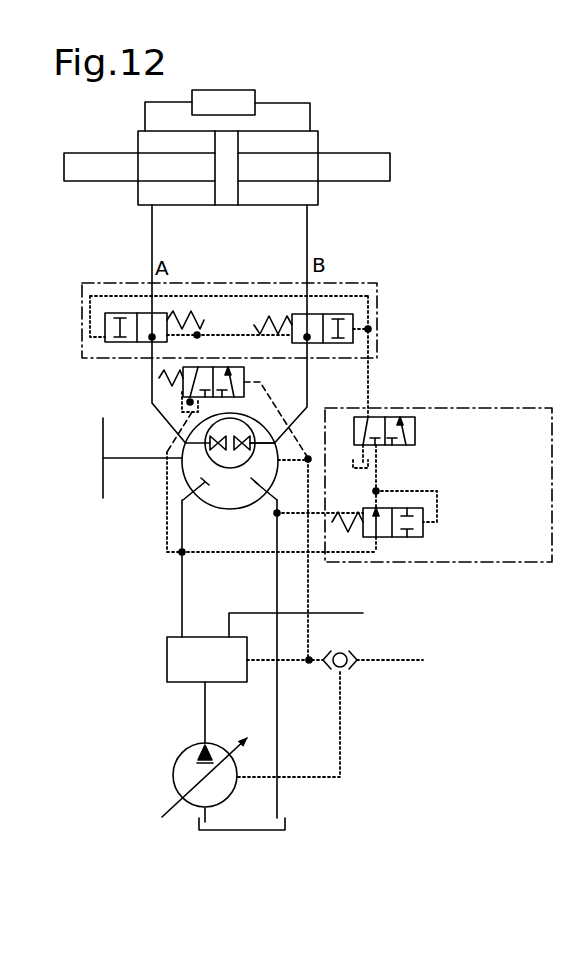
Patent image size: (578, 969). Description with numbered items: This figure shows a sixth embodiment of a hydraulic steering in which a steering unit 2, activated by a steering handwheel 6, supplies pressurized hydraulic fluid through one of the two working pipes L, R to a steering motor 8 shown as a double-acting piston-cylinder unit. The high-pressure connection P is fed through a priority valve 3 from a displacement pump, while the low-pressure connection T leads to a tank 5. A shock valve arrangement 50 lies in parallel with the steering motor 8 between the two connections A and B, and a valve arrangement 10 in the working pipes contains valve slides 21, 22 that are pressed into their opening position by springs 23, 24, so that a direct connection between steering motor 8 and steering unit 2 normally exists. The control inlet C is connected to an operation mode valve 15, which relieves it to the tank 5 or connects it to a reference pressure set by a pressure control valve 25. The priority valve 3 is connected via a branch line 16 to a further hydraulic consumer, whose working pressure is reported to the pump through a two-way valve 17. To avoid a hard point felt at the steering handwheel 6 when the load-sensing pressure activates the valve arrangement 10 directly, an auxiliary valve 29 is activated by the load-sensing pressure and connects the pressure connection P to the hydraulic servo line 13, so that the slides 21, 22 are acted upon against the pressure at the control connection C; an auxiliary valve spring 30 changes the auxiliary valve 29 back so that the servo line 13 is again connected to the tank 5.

The steering unit 2 is at (182, 492).
The priority valve 3 is at (175, 652).
The tank 5 is at (243, 830).
The steering handwheel 6 is at (103, 445).
The steering motor 8 is at (285, 137).
The valve arrangement 10 is at (377, 288).
The hydraulic servo line 13 is at (197, 347).
The operation mode valve 15 is at (420, 432).
The branch line 16 is at (363, 613).
The two-way valve 17 is at (352, 672).
The valve slide 21 is at (145, 322).
The valve slide 22 is at (297, 322).
The spring 23 is at (173, 317).
The spring 24 is at (253, 325).
The pressure control valve 25 is at (429, 535).
The auxiliary valve 29 is at (250, 372).
The auxiliary valve spring 30 is at (159, 378).
The shock valve arrangement 50 is at (250, 99).